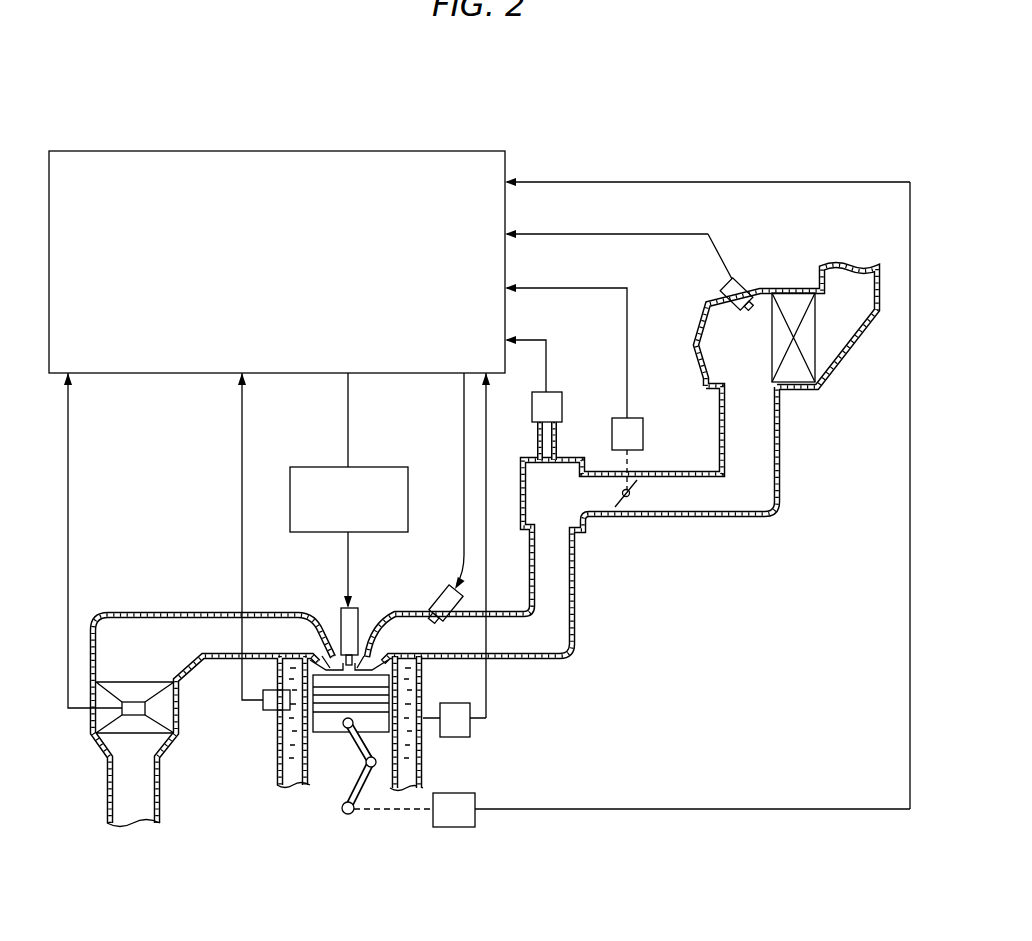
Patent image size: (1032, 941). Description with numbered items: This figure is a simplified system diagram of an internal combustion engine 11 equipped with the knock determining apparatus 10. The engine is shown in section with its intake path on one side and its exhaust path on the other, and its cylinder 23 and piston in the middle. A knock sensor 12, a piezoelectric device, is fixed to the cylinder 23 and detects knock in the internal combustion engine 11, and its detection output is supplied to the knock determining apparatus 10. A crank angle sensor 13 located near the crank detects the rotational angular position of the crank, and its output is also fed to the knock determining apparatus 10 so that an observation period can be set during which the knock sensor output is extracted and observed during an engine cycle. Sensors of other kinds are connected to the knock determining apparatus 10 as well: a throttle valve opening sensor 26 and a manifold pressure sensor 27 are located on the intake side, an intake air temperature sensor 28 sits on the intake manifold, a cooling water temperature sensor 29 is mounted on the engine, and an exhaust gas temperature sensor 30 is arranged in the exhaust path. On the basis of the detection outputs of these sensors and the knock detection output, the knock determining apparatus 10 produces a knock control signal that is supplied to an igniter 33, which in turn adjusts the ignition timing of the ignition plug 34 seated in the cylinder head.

The knock determining apparatus 10 is at (277, 137).
The internal combustion engine 11 is at (463, 775).
The knock sensor 12 is at (450, 703).
The crank angle sensor 13 is at (455, 827).
The cylinder 23 is at (423, 757).
The throttle valve opening sensor 26 is at (643, 436).
The manifold pressure sensor 27 is at (748, 290).
The intake air temperature sensor 28 is at (562, 407).
The cooling water temperature sensor 29 is at (270, 712).
The exhaust gas temperature sensor 30 is at (145, 705).
The igniter 33 is at (377, 467).
The ignition plug 34 is at (358, 608).